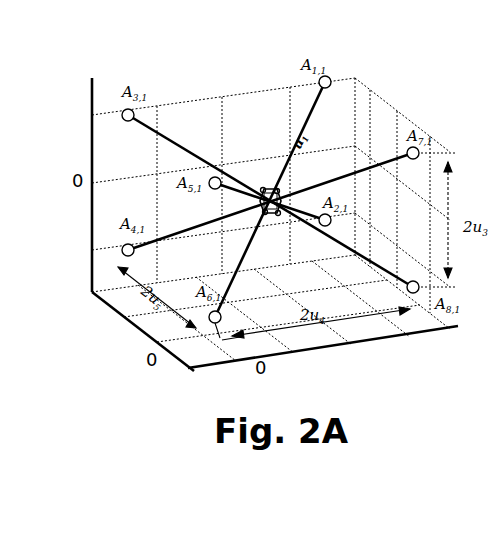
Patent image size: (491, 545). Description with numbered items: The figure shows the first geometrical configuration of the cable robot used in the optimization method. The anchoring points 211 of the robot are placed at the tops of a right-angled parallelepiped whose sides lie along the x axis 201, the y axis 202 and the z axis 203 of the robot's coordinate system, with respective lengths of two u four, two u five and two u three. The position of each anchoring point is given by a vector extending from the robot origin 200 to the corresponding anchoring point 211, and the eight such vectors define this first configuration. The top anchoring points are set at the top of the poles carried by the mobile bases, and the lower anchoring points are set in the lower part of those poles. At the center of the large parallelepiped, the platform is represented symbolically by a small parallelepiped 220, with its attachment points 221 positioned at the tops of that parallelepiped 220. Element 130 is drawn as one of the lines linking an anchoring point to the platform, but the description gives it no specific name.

The rod / strut 130 is at (176, 141).
The robot origin 200 is at (270, 214).
The x axis 201 is at (417, 335).
The y axis 202 is at (175, 365).
The z axis 203 is at (92, 88).
The anchoring point 211 is at (335, 73).
The parallelepiped 220 is at (258, 192).
The attachment point 221 is at (268, 186).